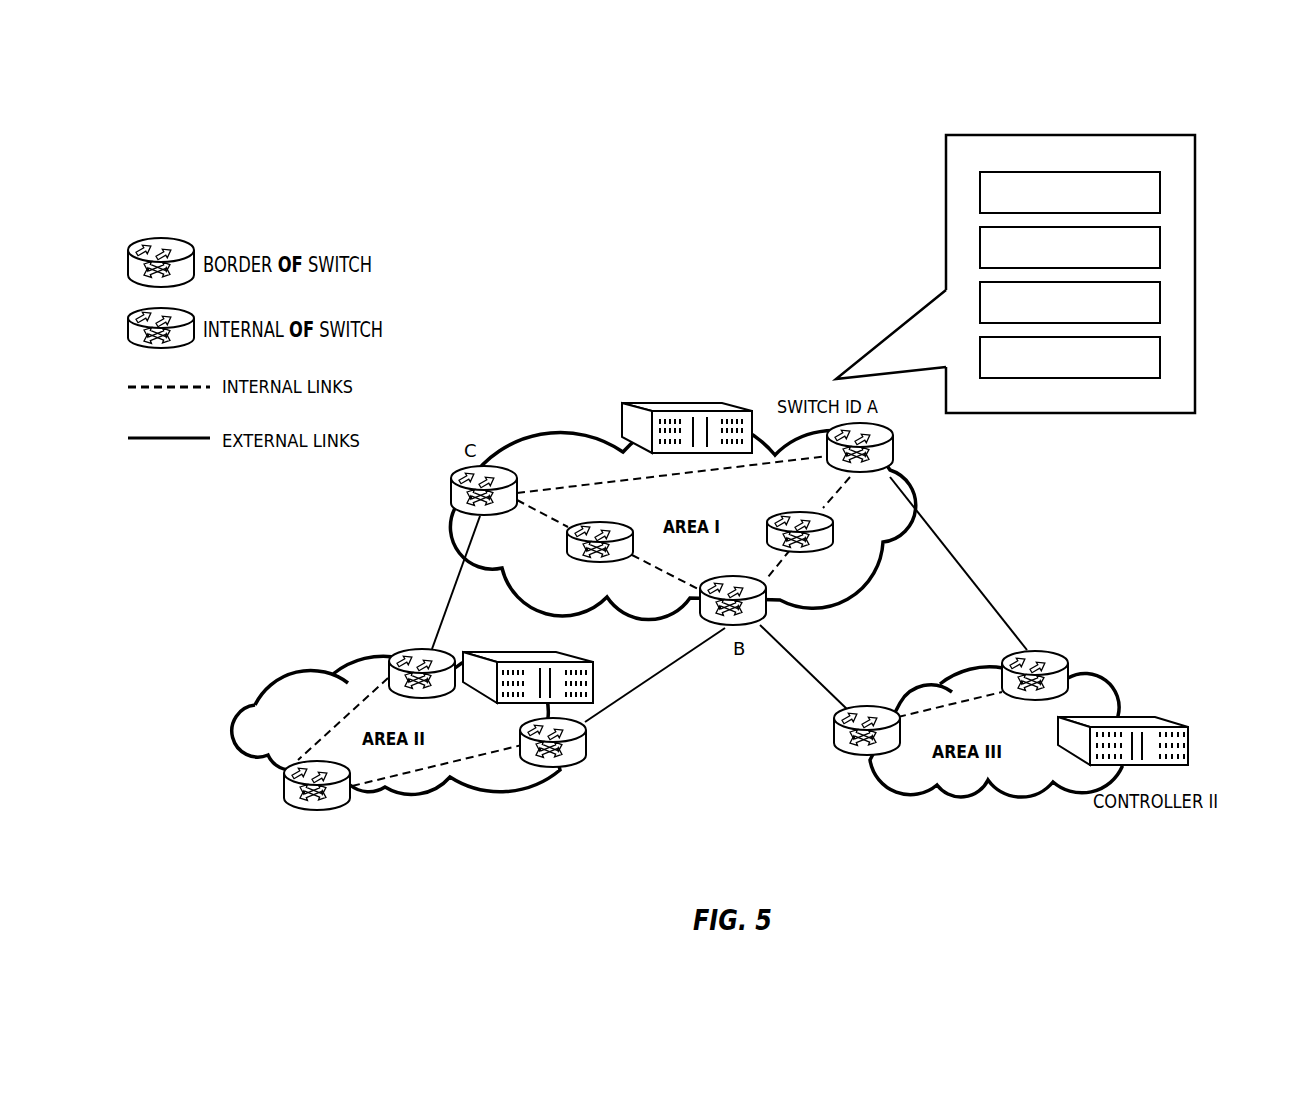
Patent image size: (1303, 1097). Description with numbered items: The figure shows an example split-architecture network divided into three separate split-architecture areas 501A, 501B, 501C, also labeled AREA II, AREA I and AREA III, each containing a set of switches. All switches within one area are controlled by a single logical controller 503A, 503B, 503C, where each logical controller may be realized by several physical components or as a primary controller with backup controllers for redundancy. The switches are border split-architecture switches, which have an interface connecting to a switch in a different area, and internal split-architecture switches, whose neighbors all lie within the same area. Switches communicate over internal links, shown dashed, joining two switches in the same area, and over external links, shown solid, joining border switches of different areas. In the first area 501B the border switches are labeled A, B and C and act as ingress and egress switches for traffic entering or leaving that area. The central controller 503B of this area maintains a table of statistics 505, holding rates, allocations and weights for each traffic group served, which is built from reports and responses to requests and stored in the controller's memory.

The split-architecture area 501A is at (423, 793).
The split-architecture area 501B is at (548, 438).
The split-architecture area 501C is at (957, 802).
The controller 503A is at (567, 657).
The central controller 503B is at (688, 407).
The controller 503C is at (1189, 744).
The table of statistics 505 is at (1196, 284).